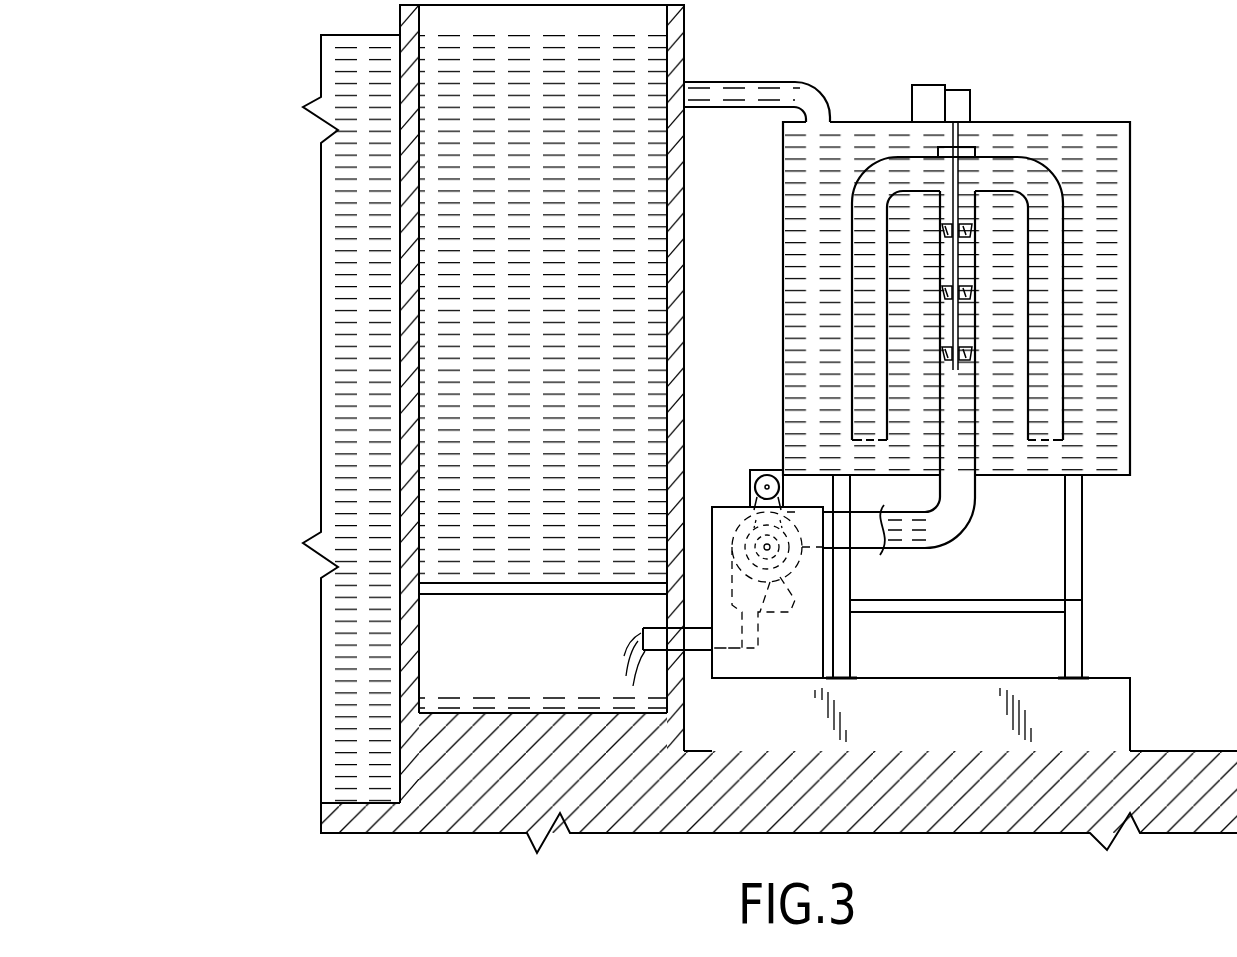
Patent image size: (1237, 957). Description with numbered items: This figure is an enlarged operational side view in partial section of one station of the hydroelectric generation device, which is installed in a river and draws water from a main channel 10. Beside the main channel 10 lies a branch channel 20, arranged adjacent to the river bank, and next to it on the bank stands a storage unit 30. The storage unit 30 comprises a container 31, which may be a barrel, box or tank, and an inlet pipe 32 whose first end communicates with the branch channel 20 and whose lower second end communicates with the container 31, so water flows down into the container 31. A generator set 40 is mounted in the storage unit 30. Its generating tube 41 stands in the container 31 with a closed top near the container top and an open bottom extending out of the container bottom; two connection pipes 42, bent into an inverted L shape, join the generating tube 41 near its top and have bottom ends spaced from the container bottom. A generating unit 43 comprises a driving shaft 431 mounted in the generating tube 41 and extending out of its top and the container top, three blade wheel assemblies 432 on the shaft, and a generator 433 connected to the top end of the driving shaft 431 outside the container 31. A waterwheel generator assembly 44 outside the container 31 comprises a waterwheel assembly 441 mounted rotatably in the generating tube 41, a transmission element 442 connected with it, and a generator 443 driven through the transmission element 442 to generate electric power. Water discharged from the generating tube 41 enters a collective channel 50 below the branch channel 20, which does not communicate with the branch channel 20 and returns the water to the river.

The main channel 10 is at (309, 173).
The branch channel 20 is at (708, 46).
The storage unit 30 is at (961, 399).
The container 31 is at (1132, 172).
The inlet pipe 32 is at (757, 108).
The generator set 40 is at (932, 386).
The generating tube 41 is at (975, 502).
The connection pipe 42 is at (882, 158).
The generating unit 43 is at (1004, 230).
The driving shaft 431 is at (957, 180).
The blade wheel assembly 432 is at (979, 300).
The generator 433 is at (927, 97).
The waterwheel generator assembly 44 is at (760, 565).
The waterwheel assembly 441 is at (785, 572).
The transmission element 442 is at (750, 500).
The generator 443 is at (760, 468).
The collective channel 50 is at (556, 656).